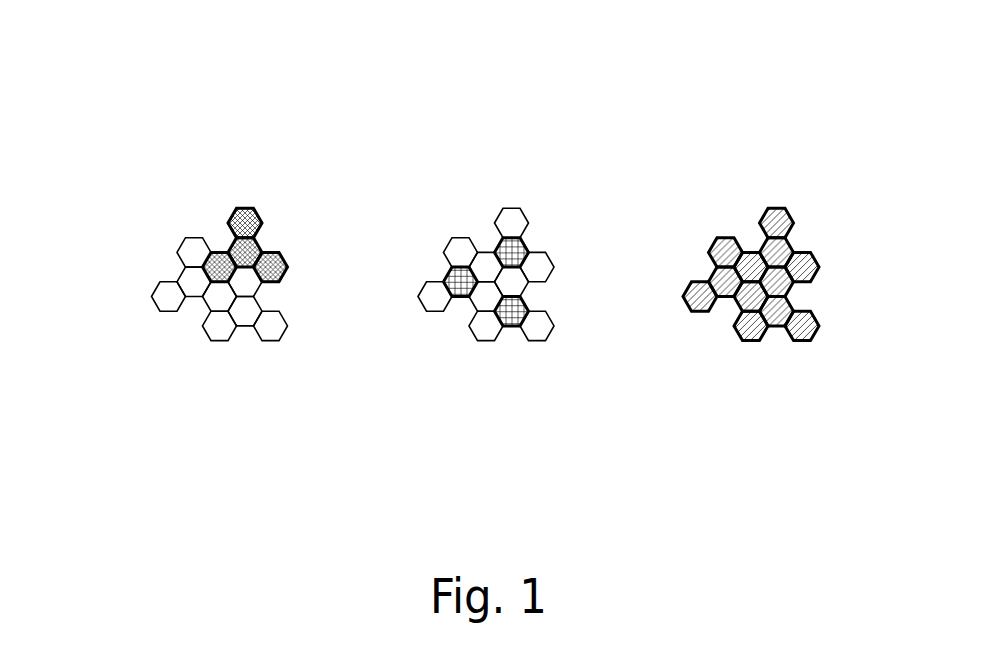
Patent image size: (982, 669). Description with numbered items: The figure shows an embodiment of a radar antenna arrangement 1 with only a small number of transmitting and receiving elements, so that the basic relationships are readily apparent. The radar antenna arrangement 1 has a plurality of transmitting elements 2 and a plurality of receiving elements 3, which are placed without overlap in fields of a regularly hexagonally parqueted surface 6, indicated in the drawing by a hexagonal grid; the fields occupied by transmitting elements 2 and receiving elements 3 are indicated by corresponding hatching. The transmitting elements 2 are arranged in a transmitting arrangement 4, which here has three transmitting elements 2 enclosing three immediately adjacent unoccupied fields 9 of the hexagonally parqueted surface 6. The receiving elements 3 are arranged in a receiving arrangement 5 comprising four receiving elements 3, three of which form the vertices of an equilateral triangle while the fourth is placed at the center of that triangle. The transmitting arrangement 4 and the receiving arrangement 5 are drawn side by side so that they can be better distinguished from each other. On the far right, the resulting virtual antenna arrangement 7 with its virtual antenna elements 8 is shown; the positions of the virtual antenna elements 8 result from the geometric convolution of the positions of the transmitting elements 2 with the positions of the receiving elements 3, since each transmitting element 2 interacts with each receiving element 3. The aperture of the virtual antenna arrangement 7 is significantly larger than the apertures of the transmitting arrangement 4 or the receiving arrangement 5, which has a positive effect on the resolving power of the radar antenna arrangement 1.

The radar antenna arrangement 1 is at (435, 137).
The transmitting elements 2 is at (445, 270).
The receiving elements 3 is at (220, 252).
The transmitting arrangement 4 is at (538, 163).
The receiving arrangement 5 is at (142, 252).
The regularly hexagonally parqueted surface 6 is at (206, 335).
The virtual antenna arrangement 7 is at (783, 167).
The virtual antenna elements 8 is at (792, 217).
The unoccupied fields 9 is at (472, 302).